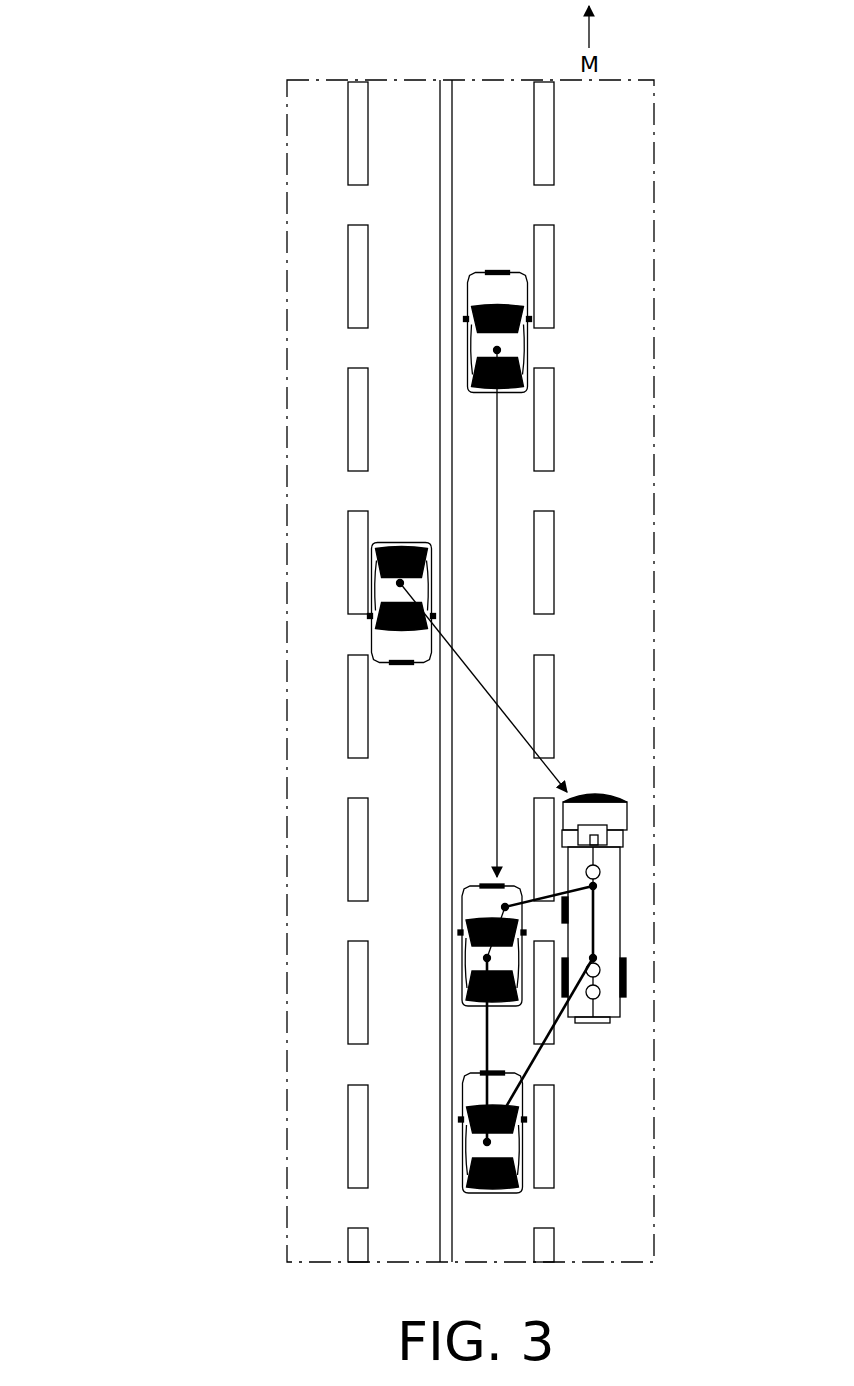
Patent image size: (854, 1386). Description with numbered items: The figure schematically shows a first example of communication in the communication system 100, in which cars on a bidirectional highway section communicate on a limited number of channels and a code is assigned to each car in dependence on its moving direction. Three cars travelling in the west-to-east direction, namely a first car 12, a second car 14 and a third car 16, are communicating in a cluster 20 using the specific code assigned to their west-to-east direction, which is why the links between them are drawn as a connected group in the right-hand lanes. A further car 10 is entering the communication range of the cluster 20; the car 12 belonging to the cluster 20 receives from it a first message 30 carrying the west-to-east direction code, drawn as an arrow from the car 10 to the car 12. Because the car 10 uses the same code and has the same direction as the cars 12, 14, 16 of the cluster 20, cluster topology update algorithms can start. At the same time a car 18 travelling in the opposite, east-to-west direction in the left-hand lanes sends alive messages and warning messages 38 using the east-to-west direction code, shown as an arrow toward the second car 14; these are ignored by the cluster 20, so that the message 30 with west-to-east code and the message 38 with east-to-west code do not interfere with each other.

The communication system 100 is at (194, 343).
The car 10 is at (498, 270).
The first car 12 is at (462, 955).
The second car 14 is at (620, 920).
The third car 16 is at (462, 1133).
The car 18 is at (371, 635).
The cluster 20 is at (547, 895).
The first message 30 is at (497, 497).
The warning message 38 is at (518, 735).